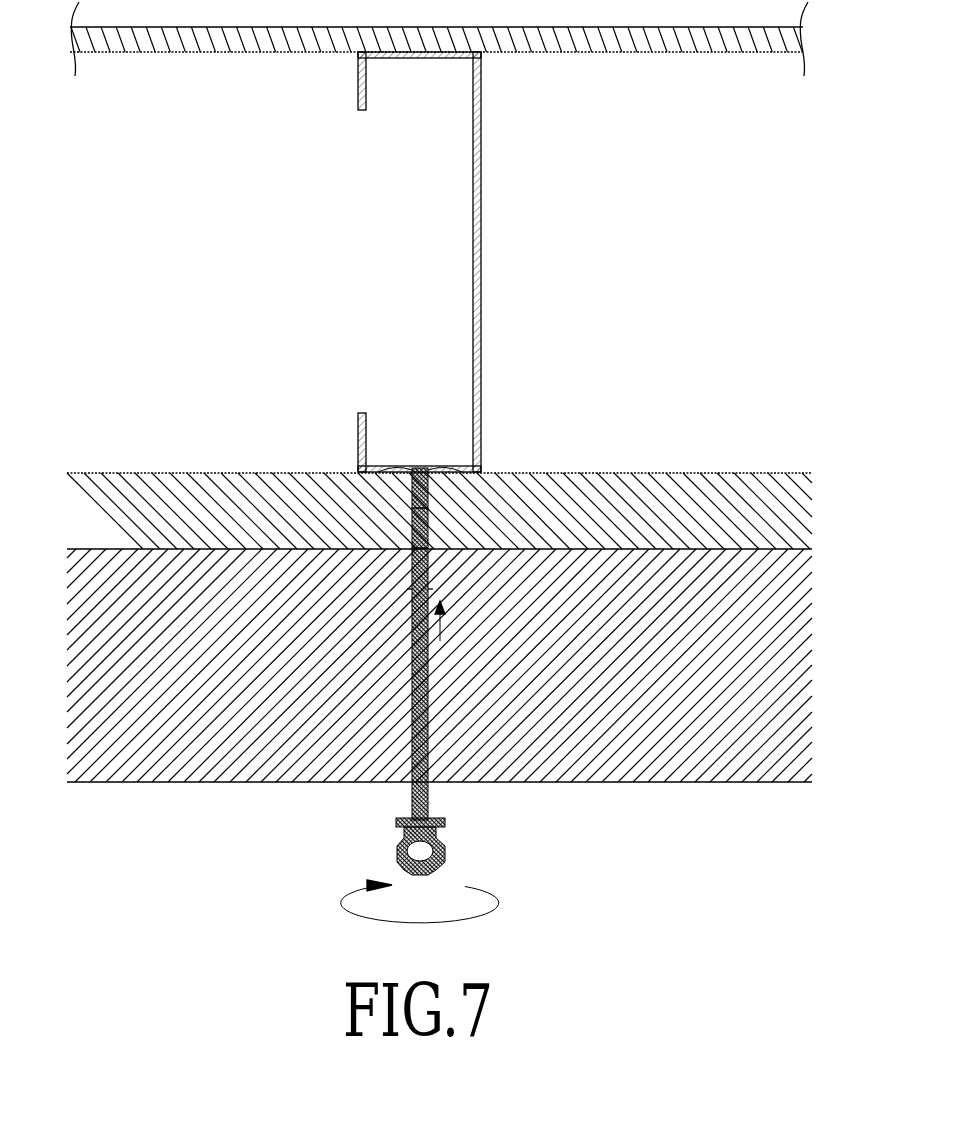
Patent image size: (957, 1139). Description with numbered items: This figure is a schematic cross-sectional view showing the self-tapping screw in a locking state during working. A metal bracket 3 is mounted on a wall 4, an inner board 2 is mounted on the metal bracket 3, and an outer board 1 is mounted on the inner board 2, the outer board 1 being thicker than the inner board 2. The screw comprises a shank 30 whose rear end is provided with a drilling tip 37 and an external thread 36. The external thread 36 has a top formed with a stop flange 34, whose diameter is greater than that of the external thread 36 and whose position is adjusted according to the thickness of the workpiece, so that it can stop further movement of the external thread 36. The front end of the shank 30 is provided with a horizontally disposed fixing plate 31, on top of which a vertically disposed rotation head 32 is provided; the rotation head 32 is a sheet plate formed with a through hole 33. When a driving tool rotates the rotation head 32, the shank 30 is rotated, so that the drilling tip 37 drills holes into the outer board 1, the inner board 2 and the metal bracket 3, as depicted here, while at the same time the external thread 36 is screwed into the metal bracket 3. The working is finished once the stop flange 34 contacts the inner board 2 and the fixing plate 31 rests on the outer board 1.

The outer board 1 is at (784, 682).
The inner board 2 is at (766, 520).
The metal bracket 3 is at (481, 263).
The wall 4 is at (738, 42).
The shank 30 is at (399, 664).
The fixing plate 31 is at (445, 823).
The rotation head 32 is at (397, 871).
The through hole 33 is at (406, 855).
The stop flange 34 is at (411, 584).
The external thread 36 is at (430, 527).
The drilling tip 37 is at (417, 468).